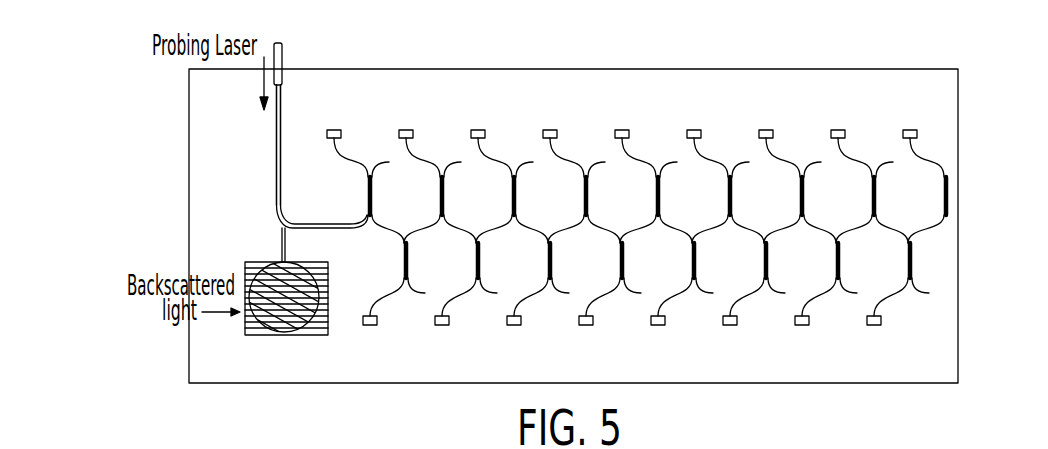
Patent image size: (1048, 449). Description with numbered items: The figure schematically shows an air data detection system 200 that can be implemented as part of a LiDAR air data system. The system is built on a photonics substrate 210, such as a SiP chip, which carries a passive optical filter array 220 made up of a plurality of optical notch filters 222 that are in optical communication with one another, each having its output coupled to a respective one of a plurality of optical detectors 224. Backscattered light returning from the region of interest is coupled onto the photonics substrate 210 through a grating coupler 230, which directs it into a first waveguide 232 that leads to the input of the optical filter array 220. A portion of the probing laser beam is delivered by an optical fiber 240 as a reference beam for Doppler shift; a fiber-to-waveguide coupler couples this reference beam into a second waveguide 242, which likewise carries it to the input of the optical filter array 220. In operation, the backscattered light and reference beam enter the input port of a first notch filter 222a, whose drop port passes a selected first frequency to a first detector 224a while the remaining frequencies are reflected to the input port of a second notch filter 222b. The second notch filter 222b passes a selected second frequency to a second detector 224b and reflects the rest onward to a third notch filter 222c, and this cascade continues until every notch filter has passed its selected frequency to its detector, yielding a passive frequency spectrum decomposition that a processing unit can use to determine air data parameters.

The air data detection system 200 is at (748, 59).
The photonics substrate 210 is at (897, 103).
The passive optical filter array 220 is at (938, 242).
The optical notch filters 222 is at (493, 160).
The first notch filter 222a is at (365, 193).
The second notch filter 222b is at (403, 267).
The third notch filter 222c is at (437, 193).
The optical detectors 224 is at (622, 128).
The first detector 224a is at (334, 128).
The second detector 224b is at (370, 327).
The grating coupler 230 is at (315, 330).
The first waveguide 232 is at (282, 242).
The optical fiber 240 is at (284, 53).
The second waveguide 242 is at (275, 143).